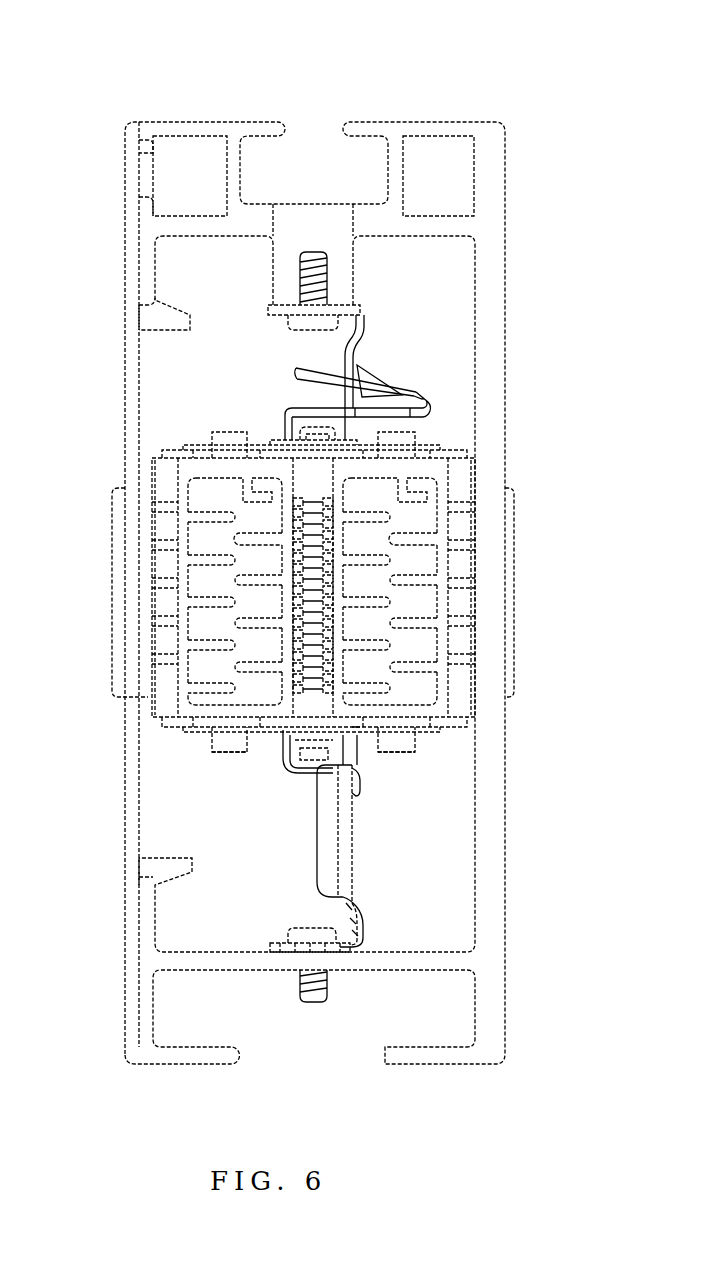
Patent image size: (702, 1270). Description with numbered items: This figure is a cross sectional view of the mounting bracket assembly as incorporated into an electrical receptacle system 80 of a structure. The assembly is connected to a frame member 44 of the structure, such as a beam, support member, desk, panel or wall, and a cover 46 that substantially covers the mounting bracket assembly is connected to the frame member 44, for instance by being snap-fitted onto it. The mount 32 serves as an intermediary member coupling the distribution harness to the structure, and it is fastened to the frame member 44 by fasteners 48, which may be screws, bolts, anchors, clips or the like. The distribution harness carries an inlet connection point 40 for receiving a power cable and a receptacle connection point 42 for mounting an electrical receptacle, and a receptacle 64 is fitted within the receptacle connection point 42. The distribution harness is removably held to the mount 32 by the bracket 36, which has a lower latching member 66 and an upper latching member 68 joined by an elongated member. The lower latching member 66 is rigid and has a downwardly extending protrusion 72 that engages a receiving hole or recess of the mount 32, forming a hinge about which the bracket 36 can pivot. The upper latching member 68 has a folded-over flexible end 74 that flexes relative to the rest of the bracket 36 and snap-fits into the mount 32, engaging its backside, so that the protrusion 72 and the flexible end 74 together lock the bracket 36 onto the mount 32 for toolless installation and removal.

The electrical receptacle system 80 is at (516, 98).
The frame member 44 is at (500, 275).
The cover 46 is at (128, 228).
The fastener 48 is at (317, 262).
The upper latching member 68 is at (455, 399).
The flexible end 74 is at (368, 374).
The inlet connection point 40 is at (130, 651).
The receptacle connection point 42 is at (430, 752).
The receptacle 64 is at (113, 565).
The bracket 36 is at (283, 768).
The lower latching member 66 is at (385, 792).
The protrusion 72 is at (360, 795).
The mount 32 is at (315, 850).